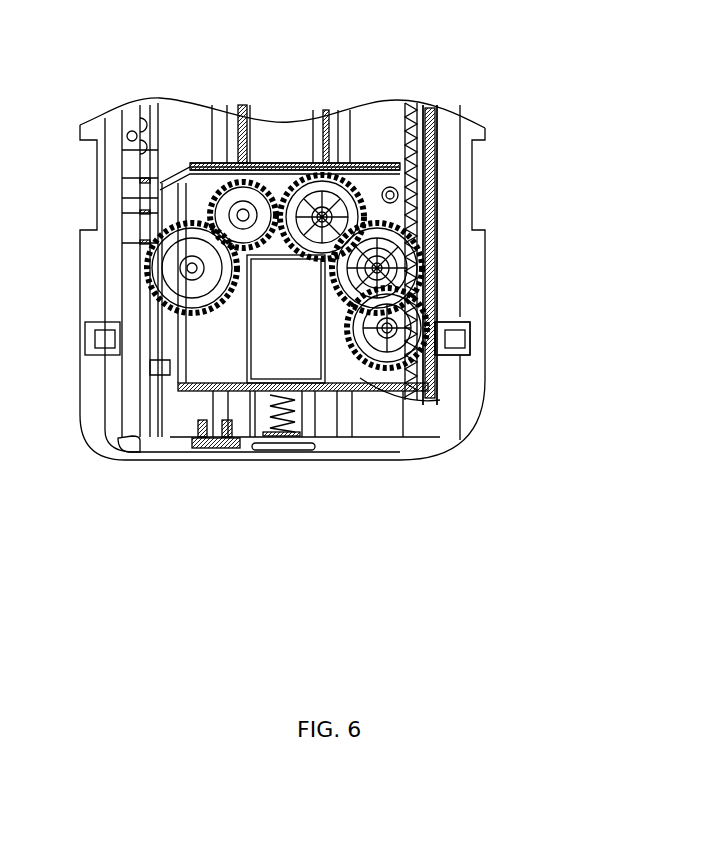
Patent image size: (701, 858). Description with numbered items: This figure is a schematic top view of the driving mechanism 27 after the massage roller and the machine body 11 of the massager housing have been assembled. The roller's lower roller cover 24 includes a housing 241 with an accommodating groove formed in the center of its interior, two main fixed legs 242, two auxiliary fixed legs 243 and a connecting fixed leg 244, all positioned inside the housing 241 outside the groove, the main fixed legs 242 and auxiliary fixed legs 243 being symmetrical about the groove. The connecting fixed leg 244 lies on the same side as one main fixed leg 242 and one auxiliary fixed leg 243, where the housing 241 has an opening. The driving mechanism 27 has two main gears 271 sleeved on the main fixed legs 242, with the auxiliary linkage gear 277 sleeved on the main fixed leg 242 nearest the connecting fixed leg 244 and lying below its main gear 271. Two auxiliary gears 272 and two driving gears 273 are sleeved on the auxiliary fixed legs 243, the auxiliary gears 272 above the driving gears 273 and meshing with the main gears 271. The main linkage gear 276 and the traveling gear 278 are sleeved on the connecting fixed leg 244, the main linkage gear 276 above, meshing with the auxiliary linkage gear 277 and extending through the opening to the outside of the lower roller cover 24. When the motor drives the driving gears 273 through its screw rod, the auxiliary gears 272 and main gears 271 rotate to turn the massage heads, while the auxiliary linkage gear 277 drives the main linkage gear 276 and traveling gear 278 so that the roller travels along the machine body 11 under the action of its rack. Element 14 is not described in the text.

The machine body 11 is at (113, 177).
The rack 14 is at (417, 128).
The lower roller cover 24 is at (394, 548).
The housing 241 is at (150, 367).
The main fixed legs 242 is at (190, 300).
The auxiliary fixed legs 243 is at (243, 250).
The connecting fixed leg 244 is at (375, 362).
The driving mechanism 27 is at (577, 147).
The main gears 271 is at (435, 240).
The auxiliary gears 272 is at (425, 177).
The driving gears 273 is at (430, 240).
The main linkage gear 276 is at (425, 400).
The auxiliary linkage gear 277 is at (400, 272).
The traveling gear 278 is at (470, 345).